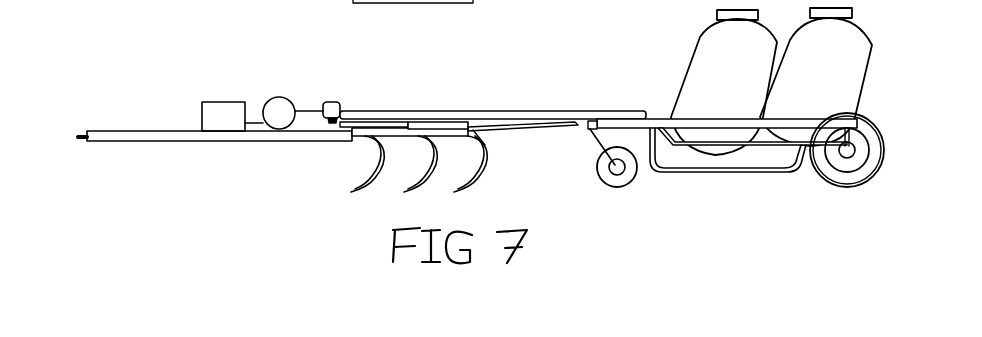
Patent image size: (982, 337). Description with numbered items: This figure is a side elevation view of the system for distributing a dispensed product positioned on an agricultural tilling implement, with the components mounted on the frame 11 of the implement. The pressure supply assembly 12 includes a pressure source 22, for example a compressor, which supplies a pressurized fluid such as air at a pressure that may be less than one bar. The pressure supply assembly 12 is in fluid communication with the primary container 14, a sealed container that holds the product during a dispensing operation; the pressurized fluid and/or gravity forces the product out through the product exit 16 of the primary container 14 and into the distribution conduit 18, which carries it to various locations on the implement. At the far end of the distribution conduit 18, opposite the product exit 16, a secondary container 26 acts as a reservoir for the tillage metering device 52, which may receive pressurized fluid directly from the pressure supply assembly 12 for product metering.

The frame 11 is at (228, 142).
The pressure supply assembly 12 is at (257, 60).
The primary container 14 is at (694, 38).
The product exit 16 is at (708, 150).
The distribution conduit 18 is at (488, 110).
The pressure source 22 is at (228, 102).
The secondary container 26 is at (333, 101).
The tillage metering device 52 is at (355, 145).